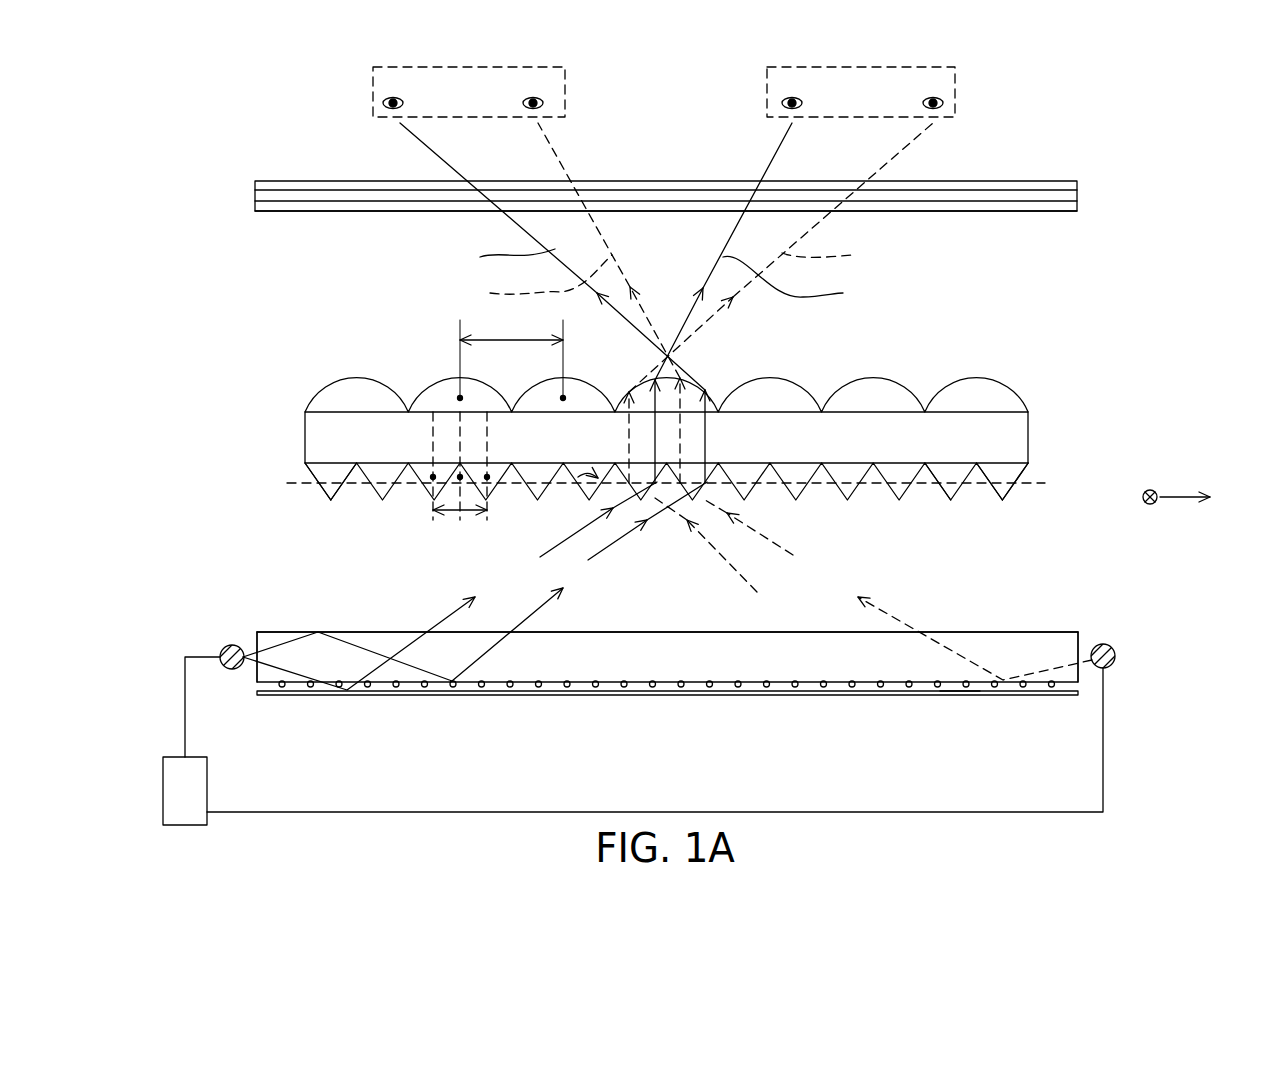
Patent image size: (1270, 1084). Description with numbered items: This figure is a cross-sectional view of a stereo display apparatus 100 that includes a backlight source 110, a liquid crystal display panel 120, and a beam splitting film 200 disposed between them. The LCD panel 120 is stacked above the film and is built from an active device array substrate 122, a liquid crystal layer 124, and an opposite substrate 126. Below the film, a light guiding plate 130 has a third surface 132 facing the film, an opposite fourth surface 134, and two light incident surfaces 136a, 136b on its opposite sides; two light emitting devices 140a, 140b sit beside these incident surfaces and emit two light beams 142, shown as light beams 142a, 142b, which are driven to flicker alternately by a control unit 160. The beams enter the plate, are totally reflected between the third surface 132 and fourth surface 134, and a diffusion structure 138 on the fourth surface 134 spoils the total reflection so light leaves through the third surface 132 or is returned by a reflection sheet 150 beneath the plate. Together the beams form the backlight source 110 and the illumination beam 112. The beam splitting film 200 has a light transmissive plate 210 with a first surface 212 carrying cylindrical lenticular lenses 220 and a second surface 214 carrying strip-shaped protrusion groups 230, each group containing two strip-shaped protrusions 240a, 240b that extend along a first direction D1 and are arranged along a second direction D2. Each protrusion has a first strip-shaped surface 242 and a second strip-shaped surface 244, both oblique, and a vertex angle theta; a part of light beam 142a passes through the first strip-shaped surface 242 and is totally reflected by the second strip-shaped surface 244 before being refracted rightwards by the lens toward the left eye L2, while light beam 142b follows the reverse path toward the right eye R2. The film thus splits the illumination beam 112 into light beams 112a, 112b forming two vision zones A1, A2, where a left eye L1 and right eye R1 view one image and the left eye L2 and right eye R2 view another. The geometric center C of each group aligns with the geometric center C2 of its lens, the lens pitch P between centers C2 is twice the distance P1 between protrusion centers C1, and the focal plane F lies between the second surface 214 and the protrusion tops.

The stereo display apparatus 100 is at (1191, 816).
The backlight source 110 is at (675, 650).
The illumination beam 112 is at (668, 376).
The light beam 112a is at (475, 258).
The light beam 112b is at (860, 258).
The liquid crystal display panel 120 is at (729, 192).
The active device array substrate 122 is at (700, 220).
The liquid crystal layer 124 is at (1077, 196).
The opposite substrate 126 is at (1077, 185).
The light guiding plate 130 is at (1052, 642).
The third surface 132 is at (1002, 629).
The fourth surface 134 is at (955, 691).
The light incident surface 136a is at (250, 636).
The light incident surface 136b is at (1082, 675).
The diffusion structure 138 is at (396, 688).
The light emitting device 140a is at (236, 670).
The light emitting device 140b is at (1116, 657).
The light beams 142 is at (728, 567).
The light beam 142a is at (293, 671).
The light beam 142b is at (740, 524).
The reflection sheet 150 is at (760, 697).
The control unit 160 is at (163, 780).
The beam splitting film 200 is at (690, 451).
The light transmissive plate 210 is at (1022, 425).
The first surface 212 is at (931, 408).
The second surface 214 is at (1022, 467).
The cylindrical lenticular lenses 220 is at (704, 353).
The strip-shaped protrusion groups 230 is at (687, 511).
The strip-shaped protrusion 240a is at (940, 482).
The strip-shaped protrusion 240b is at (1000, 482).
The first strip-shaped surface 242 is at (358, 476).
The second strip-shaped surface 244 is at (396, 486).
The vision zone A1 is at (373, 85).
The vision zone A2 is at (955, 90).
The left eye L1 is at (393, 87).
The right eye R1 is at (532, 87).
The left eye L2 is at (792, 87).
The right eye R2 is at (932, 87).
The geometric center C is at (459, 482).
The geometric centers C1 is at (431, 481).
The geometric center C2 is at (459, 396).
The distance P is at (511, 353).
The distance P1 is at (460, 496).
The focal plane F is at (1041, 484).
The first direction D1 is at (1157, 505).
The second direction D2 is at (1195, 496).